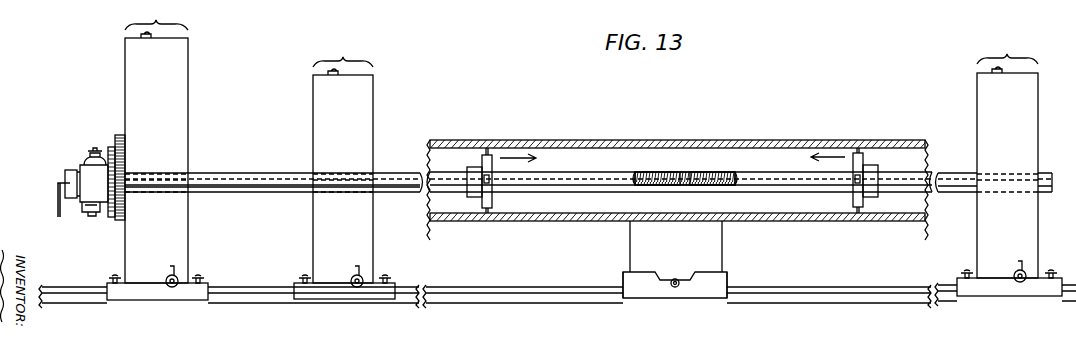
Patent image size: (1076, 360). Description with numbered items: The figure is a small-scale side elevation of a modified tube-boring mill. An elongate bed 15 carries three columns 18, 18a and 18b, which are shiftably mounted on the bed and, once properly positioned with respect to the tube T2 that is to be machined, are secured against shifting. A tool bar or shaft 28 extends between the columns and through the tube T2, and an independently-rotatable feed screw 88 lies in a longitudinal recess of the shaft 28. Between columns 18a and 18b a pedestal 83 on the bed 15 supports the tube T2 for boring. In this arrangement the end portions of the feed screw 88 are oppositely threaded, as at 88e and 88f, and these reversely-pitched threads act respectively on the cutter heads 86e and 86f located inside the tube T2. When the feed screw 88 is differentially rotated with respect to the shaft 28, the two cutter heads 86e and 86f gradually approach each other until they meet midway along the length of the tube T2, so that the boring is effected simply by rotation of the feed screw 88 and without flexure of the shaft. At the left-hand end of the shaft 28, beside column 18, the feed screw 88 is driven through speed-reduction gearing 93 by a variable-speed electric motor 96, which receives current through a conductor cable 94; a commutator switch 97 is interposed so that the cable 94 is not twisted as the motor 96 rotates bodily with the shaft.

The bed 15 is at (773, 297).
The column 18 is at (157, 150).
The column 18a is at (344, 169).
The column 18b is at (1009, 166).
The tool bar or shaft 28 is at (253, 172).
The tube T2 is at (815, 140).
The cutter head 86e is at (492, 156).
The cutter head 86f is at (860, 152).
The feed screw 88 is at (684, 172).
The threaded end portion 88e is at (649, 172).
The threaded end portion 88f is at (730, 172).
The pedestal 83 is at (716, 253).
The speed-reduction gearing 93 is at (120, 127).
The commutator switch 97 is at (90, 143).
The conductor cable 94 is at (57, 211).
The variable-speed electric motor 96 is at (84, 212).